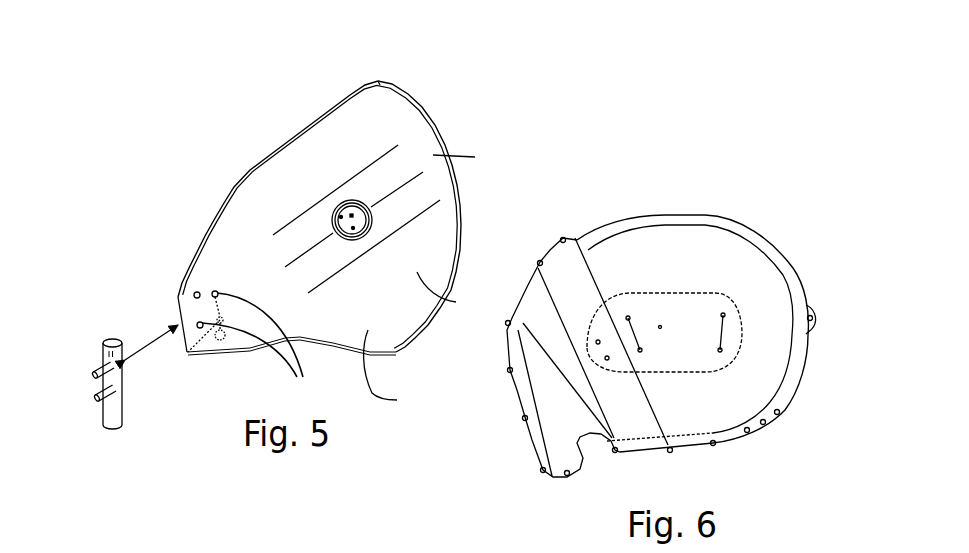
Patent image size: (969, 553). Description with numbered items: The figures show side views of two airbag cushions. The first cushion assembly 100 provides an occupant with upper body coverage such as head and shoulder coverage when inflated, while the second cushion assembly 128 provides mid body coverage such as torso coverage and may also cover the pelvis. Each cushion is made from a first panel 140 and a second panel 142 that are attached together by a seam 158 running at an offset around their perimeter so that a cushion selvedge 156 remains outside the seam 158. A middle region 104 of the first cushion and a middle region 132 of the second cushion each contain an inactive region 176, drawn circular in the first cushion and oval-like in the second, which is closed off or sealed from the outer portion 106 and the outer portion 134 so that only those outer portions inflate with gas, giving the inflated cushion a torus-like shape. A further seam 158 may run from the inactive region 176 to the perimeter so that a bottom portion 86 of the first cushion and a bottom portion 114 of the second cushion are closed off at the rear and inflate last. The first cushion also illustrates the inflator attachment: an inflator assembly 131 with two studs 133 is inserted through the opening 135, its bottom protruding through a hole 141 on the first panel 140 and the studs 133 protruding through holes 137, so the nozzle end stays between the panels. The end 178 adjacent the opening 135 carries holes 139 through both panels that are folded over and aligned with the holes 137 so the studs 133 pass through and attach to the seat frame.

In FIG. 5, the bottom portion 86 is at (394, 371).
In FIG. 5, the first cushion assembly 100 is at (443, 106).
In FIG. 5, the middle region 104 is at (323, 229).
In FIG. 5, the outer portion 106 is at (452, 156).
In FIG. 6, the bottom portion 114 is at (688, 418).
In FIG. 6, the second cushion assembly 128 is at (748, 196).
In FIG. 5, the inflator assembly 131 is at (97, 412).
In FIG. 6, the middle region 132 is at (615, 290).
In FIG. 5, the studs 133 is at (96, 399).
In FIG. 6, the outer portion 134 is at (733, 253).
In FIG. 5, the opening 135 is at (180, 307).
In FIG. 5, the holes 137 is at (259, 347).
In FIG. 5, the holes 139 is at (197, 295).
In FIG. 5, the first panel 140 is at (456, 302).
In FIG. 6, the first panel 140 is at (635, 245).
In FIG. 5, the hole 141 is at (225, 340).
In FIG. 5, the second panel 142 is at (410, 226).
In FIG. 6, the second panel 142 is at (674, 257).
In FIG. 5, the cushion selvedge 156 is at (402, 350).
In FIG. 6, the cushion selvedge 156 is at (720, 360).
In FIG. 5, the seam 158 is at (381, 83).
In FIG. 6, the seam 158 is at (776, 255).
In FIG. 5, the inactive region 176 is at (333, 212).
In FIG. 6, the inactive region 176 is at (697, 353).
In FIG. 5, the end 178 is at (178, 324).